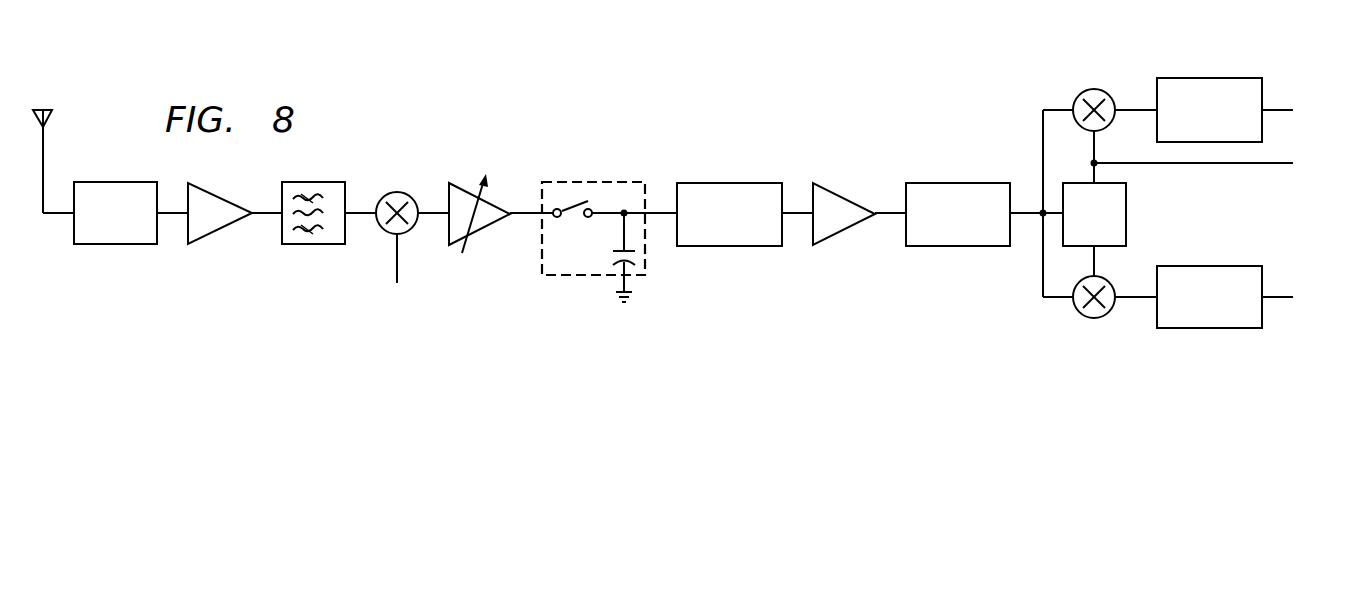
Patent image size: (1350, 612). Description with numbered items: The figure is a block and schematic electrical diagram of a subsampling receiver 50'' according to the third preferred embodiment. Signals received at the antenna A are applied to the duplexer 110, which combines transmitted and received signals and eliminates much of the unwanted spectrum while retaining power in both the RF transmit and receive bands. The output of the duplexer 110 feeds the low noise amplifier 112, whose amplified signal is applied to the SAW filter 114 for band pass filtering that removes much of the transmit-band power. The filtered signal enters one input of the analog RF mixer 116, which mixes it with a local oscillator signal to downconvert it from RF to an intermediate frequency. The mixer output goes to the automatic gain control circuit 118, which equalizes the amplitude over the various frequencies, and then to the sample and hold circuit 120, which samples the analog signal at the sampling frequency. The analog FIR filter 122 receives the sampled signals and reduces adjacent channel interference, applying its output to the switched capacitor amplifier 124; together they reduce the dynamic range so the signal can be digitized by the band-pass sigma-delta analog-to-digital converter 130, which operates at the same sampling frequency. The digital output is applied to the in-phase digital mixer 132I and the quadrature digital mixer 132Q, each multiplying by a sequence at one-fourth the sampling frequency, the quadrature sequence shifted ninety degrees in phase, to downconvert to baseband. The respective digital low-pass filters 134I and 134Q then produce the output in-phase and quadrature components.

The subsampling receiver 50'' is at (676, 204).
The antenna A is at (39, 101).
The duplexer 110 is at (116, 248).
The low noise amplifier 112 is at (222, 234).
The SAW filter 114 is at (313, 248).
The analog RF mixer 116 is at (392, 191).
The automatic gain control circuit 118 is at (481, 233).
The sample and hold circuit 120 is at (585, 277).
The analog FIR filter 122 is at (730, 248).
The switched capacitor amplifier 124 is at (845, 232).
The band-pass sigma-delta analog-to-digital converter 130 is at (957, 248).
The in-phase digital mixer 132I is at (1091, 89).
The in-phase digital low-pass filter 134I is at (1208, 77).
The quadrature digital mixer 132Q is at (1090, 319).
The quadrature digital low-pass filter 134Q is at (1210, 330).